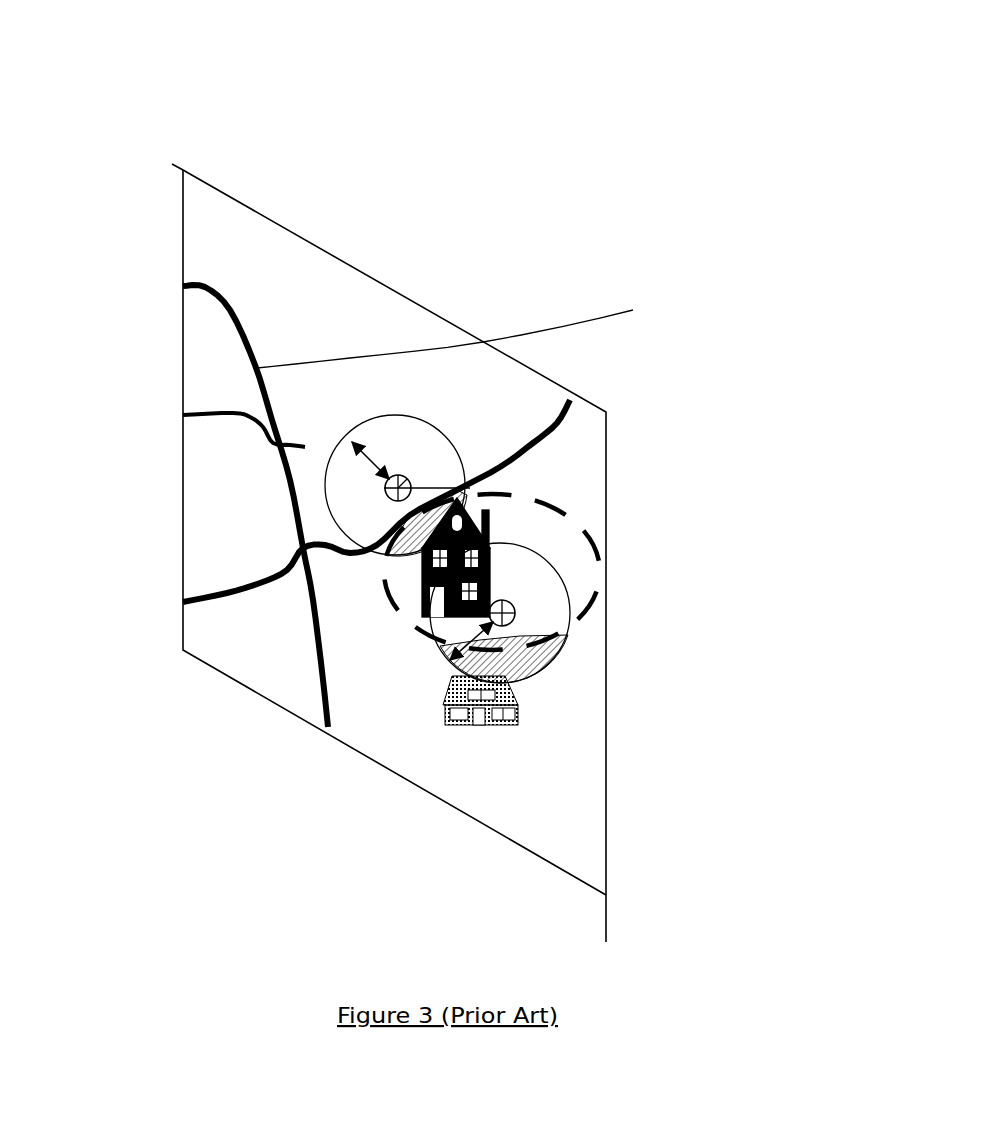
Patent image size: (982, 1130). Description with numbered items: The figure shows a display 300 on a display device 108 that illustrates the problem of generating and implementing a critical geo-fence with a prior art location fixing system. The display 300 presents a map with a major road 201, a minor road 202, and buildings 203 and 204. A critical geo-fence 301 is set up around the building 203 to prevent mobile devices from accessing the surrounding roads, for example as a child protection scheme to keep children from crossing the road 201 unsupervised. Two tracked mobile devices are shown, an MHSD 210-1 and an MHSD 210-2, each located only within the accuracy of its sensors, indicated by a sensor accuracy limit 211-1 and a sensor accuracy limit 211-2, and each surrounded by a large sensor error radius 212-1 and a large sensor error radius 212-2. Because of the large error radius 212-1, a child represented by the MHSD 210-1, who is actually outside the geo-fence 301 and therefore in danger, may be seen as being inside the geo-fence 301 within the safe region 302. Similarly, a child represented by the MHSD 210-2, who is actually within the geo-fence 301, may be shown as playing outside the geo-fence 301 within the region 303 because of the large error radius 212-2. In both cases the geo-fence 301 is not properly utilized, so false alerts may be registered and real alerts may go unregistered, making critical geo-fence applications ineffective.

The display 300 is at (443, 35).
The display device 108 is at (347, 265).
The major roads 201 is at (633, 310).
The MHSD 210-1 is at (465, 487).
The building 203 is at (470, 490).
The sensor error radius 212-1 is at (372, 457).
The sensor accuracy limit 211-1 is at (385, 553).
The MHSD 210-2 is at (600, 545).
The critical geo-fence 301 is at (422, 565).
The safe region 302 is at (445, 645).
The minor roads 202 is at (565, 640).
The sensor error radius 212-2 is at (422, 585).
The sensor accuracy limit 211-2 is at (545, 680).
The region 303 is at (517, 683).
The building 204 is at (622, 664).